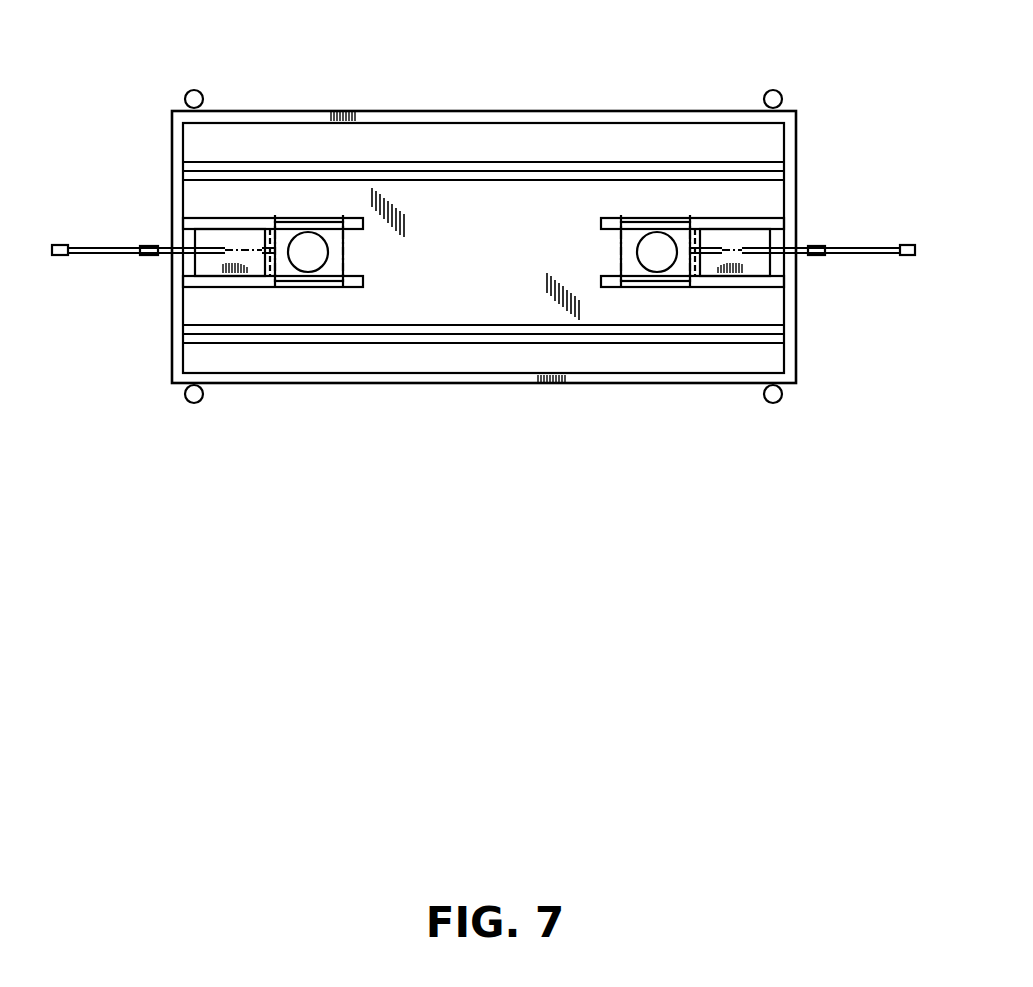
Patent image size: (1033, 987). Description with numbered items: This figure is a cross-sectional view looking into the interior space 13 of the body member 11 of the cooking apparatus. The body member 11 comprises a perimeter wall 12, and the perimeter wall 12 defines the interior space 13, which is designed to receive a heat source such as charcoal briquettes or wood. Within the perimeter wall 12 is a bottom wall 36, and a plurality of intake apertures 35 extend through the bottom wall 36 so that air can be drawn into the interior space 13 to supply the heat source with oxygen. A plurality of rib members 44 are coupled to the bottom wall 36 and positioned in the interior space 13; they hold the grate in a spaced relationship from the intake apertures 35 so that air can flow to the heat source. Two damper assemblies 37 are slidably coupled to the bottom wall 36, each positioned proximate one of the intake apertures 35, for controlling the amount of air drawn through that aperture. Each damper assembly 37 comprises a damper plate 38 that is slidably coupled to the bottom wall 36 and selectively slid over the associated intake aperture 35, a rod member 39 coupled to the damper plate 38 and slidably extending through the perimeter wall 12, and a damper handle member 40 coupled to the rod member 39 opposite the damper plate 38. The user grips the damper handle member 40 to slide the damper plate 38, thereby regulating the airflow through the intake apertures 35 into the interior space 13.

The body member 11 is at (795, 110).
The perimeter wall 12 is at (593, 115).
The interior space 13 is at (662, 145).
The bottom wall 36 is at (403, 145).
The rib members 44 is at (500, 170).
The intake apertures 35 is at (315, 262).
The damper assemblies 37 is at (150, 211).
The damper plate 38 is at (215, 238).
The rod member 39 is at (120, 253).
The damper handle member 40 is at (60, 257).